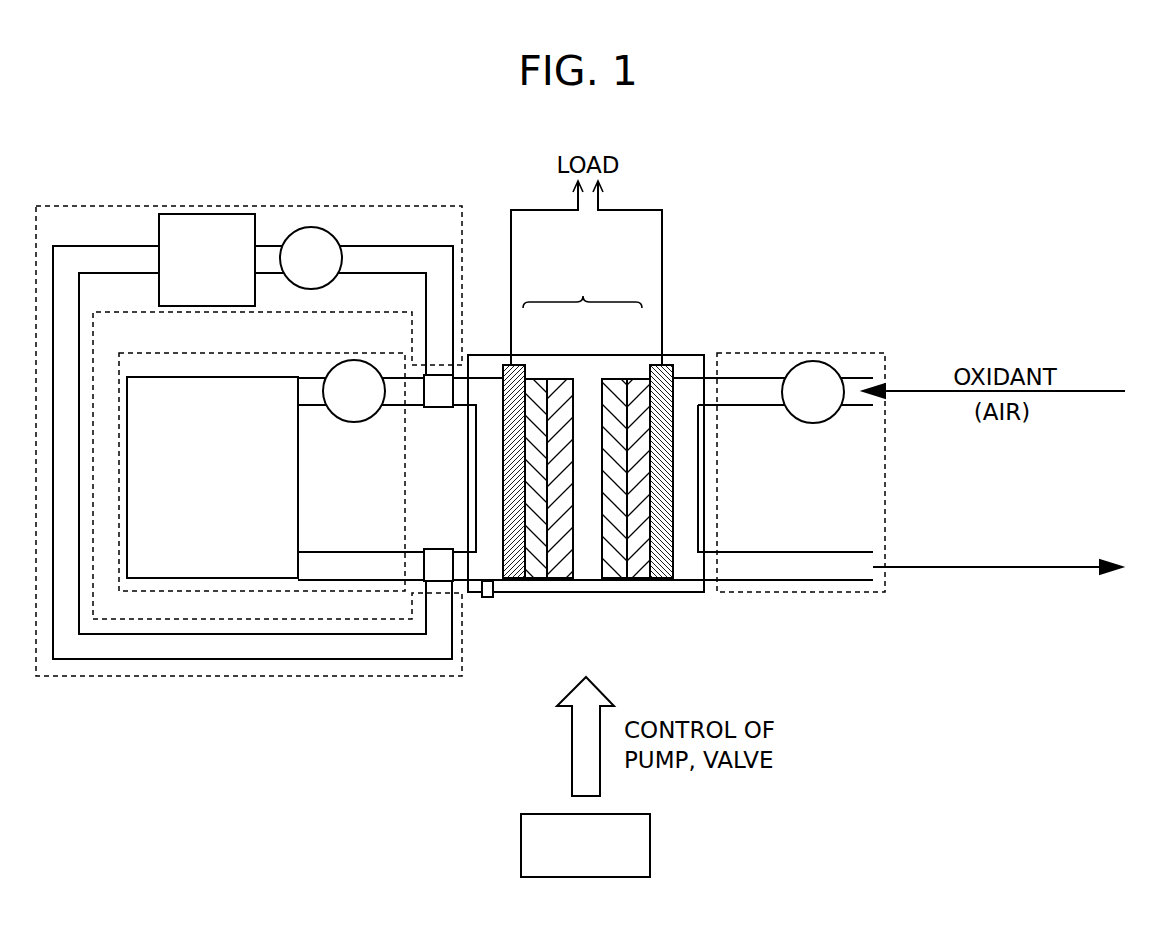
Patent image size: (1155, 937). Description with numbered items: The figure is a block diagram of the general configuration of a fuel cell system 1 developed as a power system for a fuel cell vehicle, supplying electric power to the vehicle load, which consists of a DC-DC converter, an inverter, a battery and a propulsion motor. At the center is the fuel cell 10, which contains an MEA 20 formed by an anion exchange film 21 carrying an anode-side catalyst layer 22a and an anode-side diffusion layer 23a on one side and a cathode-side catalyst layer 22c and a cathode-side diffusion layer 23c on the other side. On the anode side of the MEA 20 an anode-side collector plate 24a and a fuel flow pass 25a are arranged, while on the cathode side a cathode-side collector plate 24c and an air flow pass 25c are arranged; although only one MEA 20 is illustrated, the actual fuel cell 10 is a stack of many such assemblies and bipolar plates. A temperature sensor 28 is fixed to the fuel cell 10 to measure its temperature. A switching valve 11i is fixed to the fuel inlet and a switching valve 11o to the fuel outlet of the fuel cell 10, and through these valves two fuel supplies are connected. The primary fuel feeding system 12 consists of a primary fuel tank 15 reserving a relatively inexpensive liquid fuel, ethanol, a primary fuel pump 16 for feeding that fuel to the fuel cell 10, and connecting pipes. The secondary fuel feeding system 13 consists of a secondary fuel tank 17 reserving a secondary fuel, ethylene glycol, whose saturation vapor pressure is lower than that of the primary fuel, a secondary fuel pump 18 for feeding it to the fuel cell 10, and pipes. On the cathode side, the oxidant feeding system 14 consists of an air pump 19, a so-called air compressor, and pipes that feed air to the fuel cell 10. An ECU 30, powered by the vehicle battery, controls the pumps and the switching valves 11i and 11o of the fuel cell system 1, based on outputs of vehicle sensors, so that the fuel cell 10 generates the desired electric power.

The fuel cell system 1 is at (851, 247).
The fuel cell 10 is at (690, 354).
The switching valve 11i is at (438, 408).
The switching valve 11o is at (440, 548).
The primary fuel feeding system 12 is at (250, 592).
The secondary fuel feeding system 13 is at (130, 205).
The oxidant feeding system 14 is at (757, 352).
The primary fuel tank 15 is at (217, 376).
The primary fuel pump 16 is at (354, 422).
The secondary fuel tank 17 is at (210, 213).
The secondary fuel pump 18 is at (311, 226).
The air pump 19 is at (813, 424).
The MEA 20 is at (582, 290).
The anion exchange film 21 is at (581, 361).
The anode-side catalyst layer 22a is at (560, 580).
The cathode-side catalyst layer 22c is at (612, 580).
The anode-side diffusion layer 23a is at (530, 361).
The cathode-side diffusion layer 23c is at (633, 361).
The anode-side collector plate 24a is at (513, 580).
The cathode-side collector plate 24c is at (662, 580).
The fuel flow pass 25a is at (482, 388).
The air flow pass 25c is at (690, 572).
The temperature sensor 28 is at (491, 600).
The ECU 30 is at (652, 845).